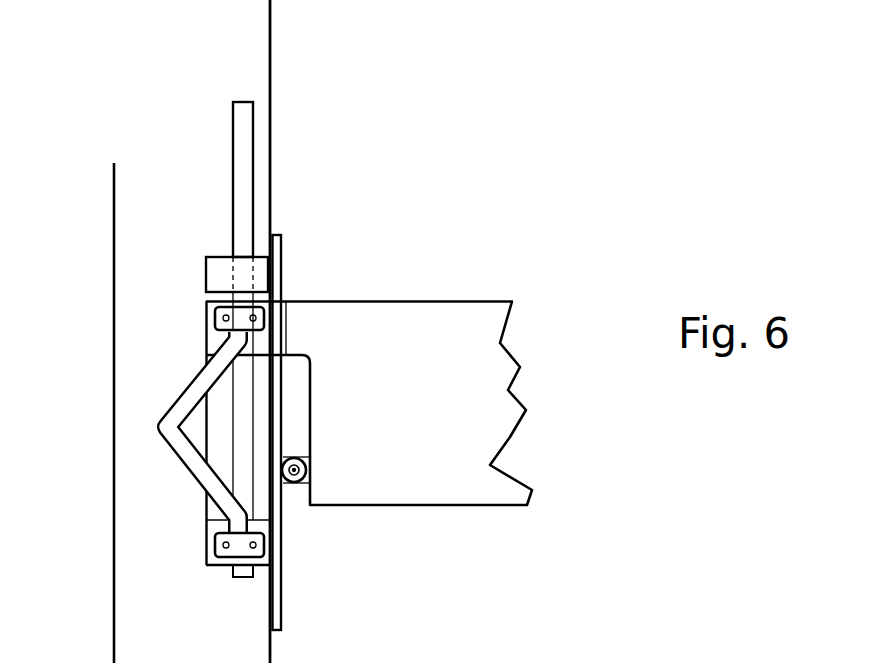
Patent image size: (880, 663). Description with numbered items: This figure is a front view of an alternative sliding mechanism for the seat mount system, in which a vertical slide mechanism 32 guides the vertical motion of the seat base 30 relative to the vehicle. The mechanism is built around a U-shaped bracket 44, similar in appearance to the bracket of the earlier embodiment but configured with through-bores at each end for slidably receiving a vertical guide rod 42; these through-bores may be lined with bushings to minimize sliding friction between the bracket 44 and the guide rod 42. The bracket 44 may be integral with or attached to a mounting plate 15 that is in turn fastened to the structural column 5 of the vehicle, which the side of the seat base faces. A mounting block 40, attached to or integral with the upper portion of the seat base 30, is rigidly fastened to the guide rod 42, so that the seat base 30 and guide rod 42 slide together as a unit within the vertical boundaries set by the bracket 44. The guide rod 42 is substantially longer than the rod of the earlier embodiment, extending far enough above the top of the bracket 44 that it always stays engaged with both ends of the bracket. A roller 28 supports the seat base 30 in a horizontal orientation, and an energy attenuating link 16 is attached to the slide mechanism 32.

The structural column 5 is at (272, 43).
The mounting plate 15 is at (282, 596).
The energy attenuating link 16 is at (167, 397).
The roller 28 is at (298, 480).
The seat base 30 is at (392, 300).
The vertical slide mechanism 32 is at (148, 311).
The mounting block 40 is at (265, 337).
The vertical guide rod 42 is at (255, 164).
The U-shaped bracket 44 is at (202, 507).